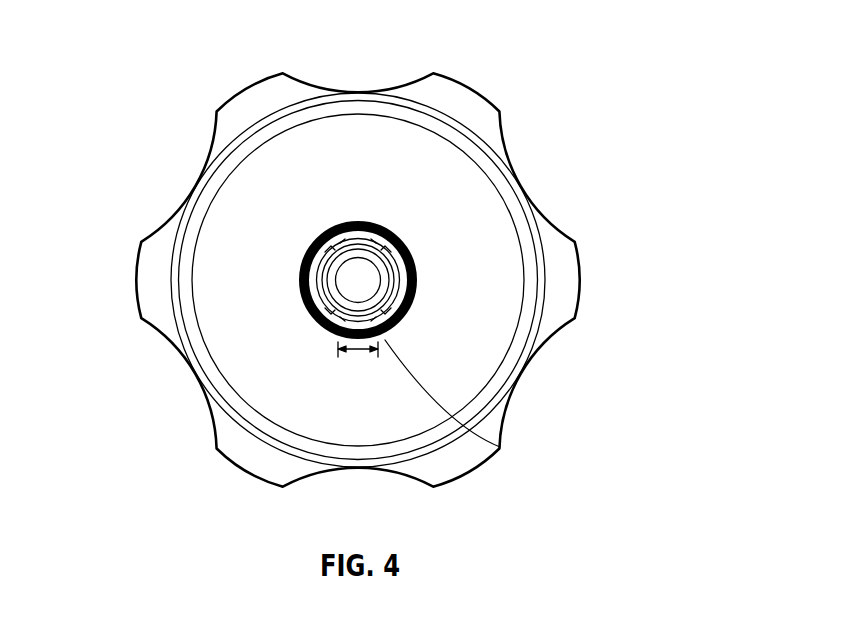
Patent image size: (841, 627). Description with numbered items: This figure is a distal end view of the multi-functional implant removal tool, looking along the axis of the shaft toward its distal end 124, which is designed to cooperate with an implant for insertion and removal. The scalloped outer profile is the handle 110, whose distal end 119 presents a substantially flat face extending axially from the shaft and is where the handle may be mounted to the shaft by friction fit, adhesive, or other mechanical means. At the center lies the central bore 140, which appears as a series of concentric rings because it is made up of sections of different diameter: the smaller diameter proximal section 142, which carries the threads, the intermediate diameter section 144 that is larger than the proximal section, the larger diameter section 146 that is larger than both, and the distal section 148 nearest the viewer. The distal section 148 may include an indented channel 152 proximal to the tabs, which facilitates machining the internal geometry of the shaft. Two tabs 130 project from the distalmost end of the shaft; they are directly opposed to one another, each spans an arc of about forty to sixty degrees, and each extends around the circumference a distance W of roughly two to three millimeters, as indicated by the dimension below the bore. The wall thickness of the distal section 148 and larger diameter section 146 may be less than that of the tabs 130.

The handle 110 is at (562, 281).
The distal end of shaft 124 is at (152, 93).
The tabs 130 is at (353, 222).
The central bore 140 is at (355, 273).
The indented channel 152 is at (383, 228).
The larger diameter section 146 is at (298, 262).
The intermediate diameter section 144 is at (302, 277).
The smaller diameter proximal section 142 is at (308, 300).
The distal section 148 is at (413, 310).
The distal end of handle 119 is at (500, 447).
The circumferential distance of tab W is at (358, 352).